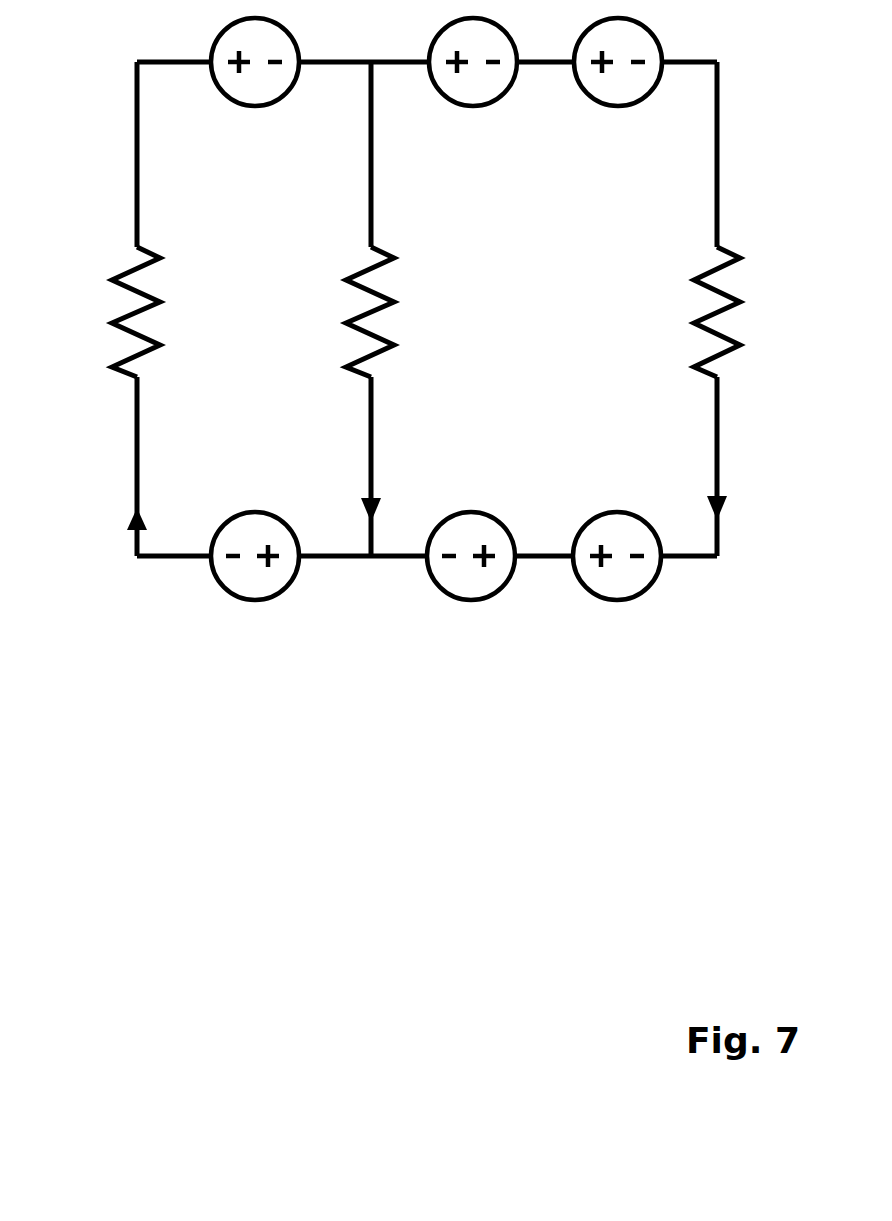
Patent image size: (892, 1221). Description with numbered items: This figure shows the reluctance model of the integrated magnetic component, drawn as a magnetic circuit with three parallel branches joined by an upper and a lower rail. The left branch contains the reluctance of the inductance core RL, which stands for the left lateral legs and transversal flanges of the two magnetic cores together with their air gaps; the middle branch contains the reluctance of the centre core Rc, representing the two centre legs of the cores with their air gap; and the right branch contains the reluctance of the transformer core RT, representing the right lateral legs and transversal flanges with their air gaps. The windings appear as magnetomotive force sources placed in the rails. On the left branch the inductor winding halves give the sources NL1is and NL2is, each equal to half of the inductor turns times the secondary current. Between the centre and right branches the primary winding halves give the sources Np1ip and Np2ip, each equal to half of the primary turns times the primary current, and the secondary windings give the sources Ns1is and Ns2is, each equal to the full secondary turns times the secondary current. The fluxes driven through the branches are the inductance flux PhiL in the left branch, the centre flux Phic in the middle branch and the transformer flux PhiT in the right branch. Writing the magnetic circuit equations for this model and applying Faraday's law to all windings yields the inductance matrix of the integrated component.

The reluctance of the inductance core RL is at (108, 312).
The reluctance of the transformer core RT is at (336, 312).
The reluctance of the centre core Rc is at (745, 312).
The magnetomotive force of first inductor winding portion NL1is is at (255, 97).
The magnetomotive force of first primary winding portion Np1ip is at (473, 97).
The magnetomotive force of first secondary winding Ns1is is at (618, 97).
The magnetomotive force of second inductor winding portion NL2is is at (255, 525).
The magnetomotive force of second primary winding portion Np2ip is at (471, 525).
The magnetomotive force of second secondary winding Ns2is is at (617, 525).
The inductance core flux PhiL is at (183, 517).
The centre core flux Phic is at (330, 517).
The transformer core flux PhiT is at (775, 515).